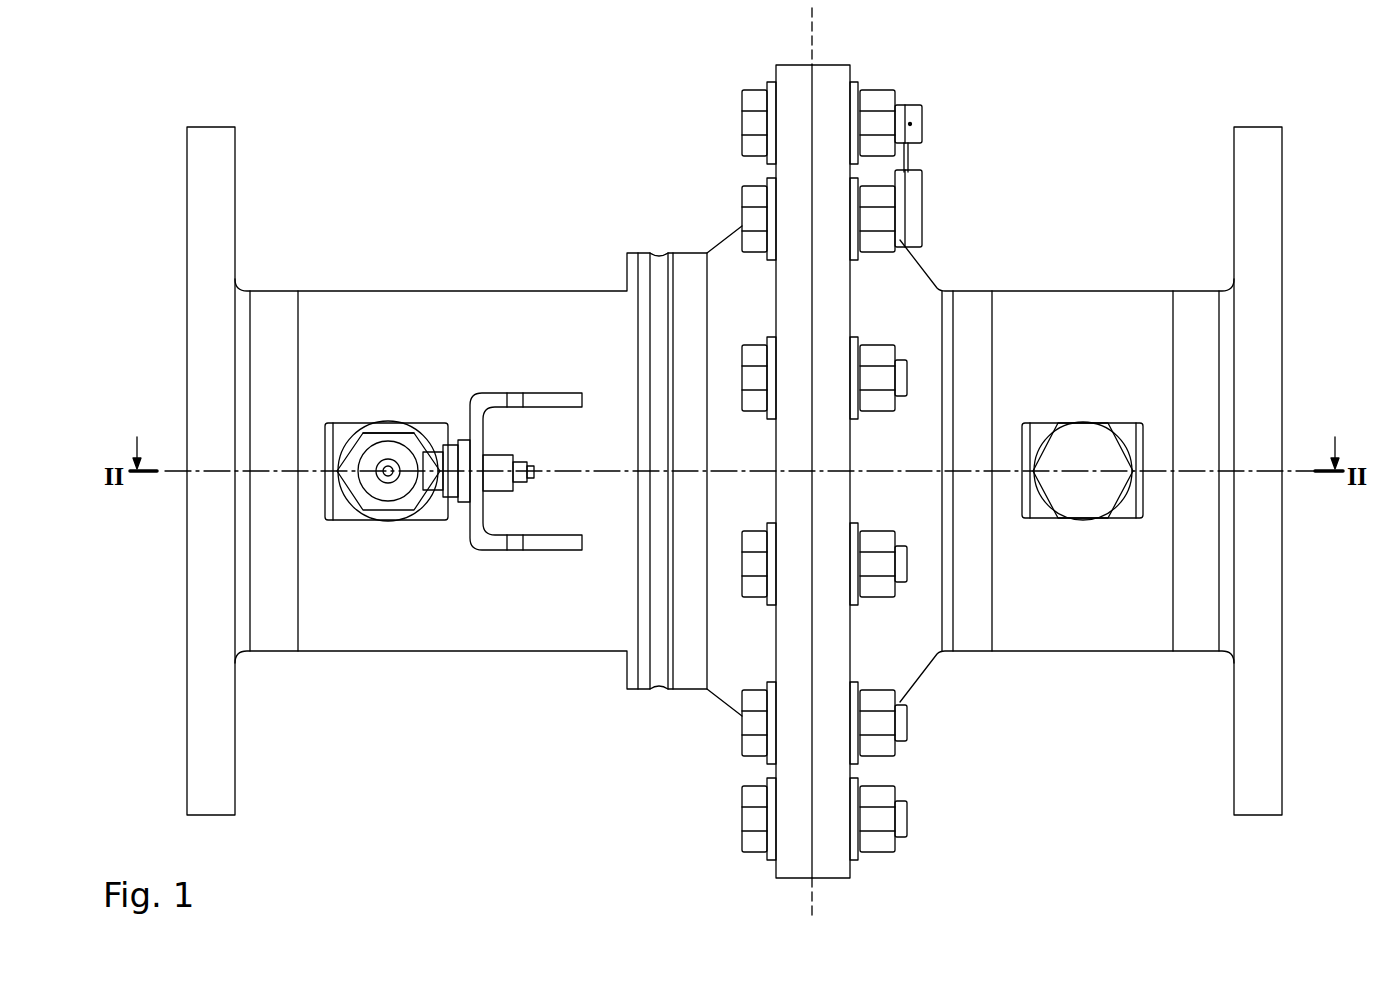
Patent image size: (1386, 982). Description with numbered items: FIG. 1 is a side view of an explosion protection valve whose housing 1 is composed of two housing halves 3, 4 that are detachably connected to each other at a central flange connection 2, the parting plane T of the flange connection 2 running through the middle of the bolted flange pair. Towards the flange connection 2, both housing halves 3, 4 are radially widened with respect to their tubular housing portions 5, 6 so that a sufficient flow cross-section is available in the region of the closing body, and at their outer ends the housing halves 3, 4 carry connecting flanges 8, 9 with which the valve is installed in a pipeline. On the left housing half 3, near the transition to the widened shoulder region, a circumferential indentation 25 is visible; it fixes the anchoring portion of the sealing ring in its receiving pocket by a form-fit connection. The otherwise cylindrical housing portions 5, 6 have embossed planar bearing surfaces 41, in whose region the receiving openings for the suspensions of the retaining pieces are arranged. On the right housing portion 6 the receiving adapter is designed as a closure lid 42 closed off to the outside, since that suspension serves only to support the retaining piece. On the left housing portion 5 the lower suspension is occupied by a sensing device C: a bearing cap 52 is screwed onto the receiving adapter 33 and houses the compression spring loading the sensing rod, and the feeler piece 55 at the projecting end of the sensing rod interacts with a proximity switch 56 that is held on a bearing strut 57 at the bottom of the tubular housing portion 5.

The housing 1 is at (992, 284).
The flange connection 2 is at (830, 58).
The housing half 3 is at (470, 284).
The housing half 4 is at (1141, 284).
The tubular housing portion 5 is at (352, 313).
The tubular housing portion 6 is at (1068, 315).
The connecting flange 8 is at (201, 184).
The connecting flange 9 is at (1273, 183).
The circumferential indentation 25 is at (661, 258).
The receiving adapter 33 is at (382, 522).
The planar bearing surface 41 is at (438, 483).
The closure lid 42 is at (1082, 495).
The bearing cap 52 is at (387, 513).
The feeler piece 55 is at (370, 477).
The proximity switch 56 is at (440, 510).
The bearing strut 57 is at (478, 505).
The sensing device C is at (390, 426).
The parting plane T is at (810, 28).